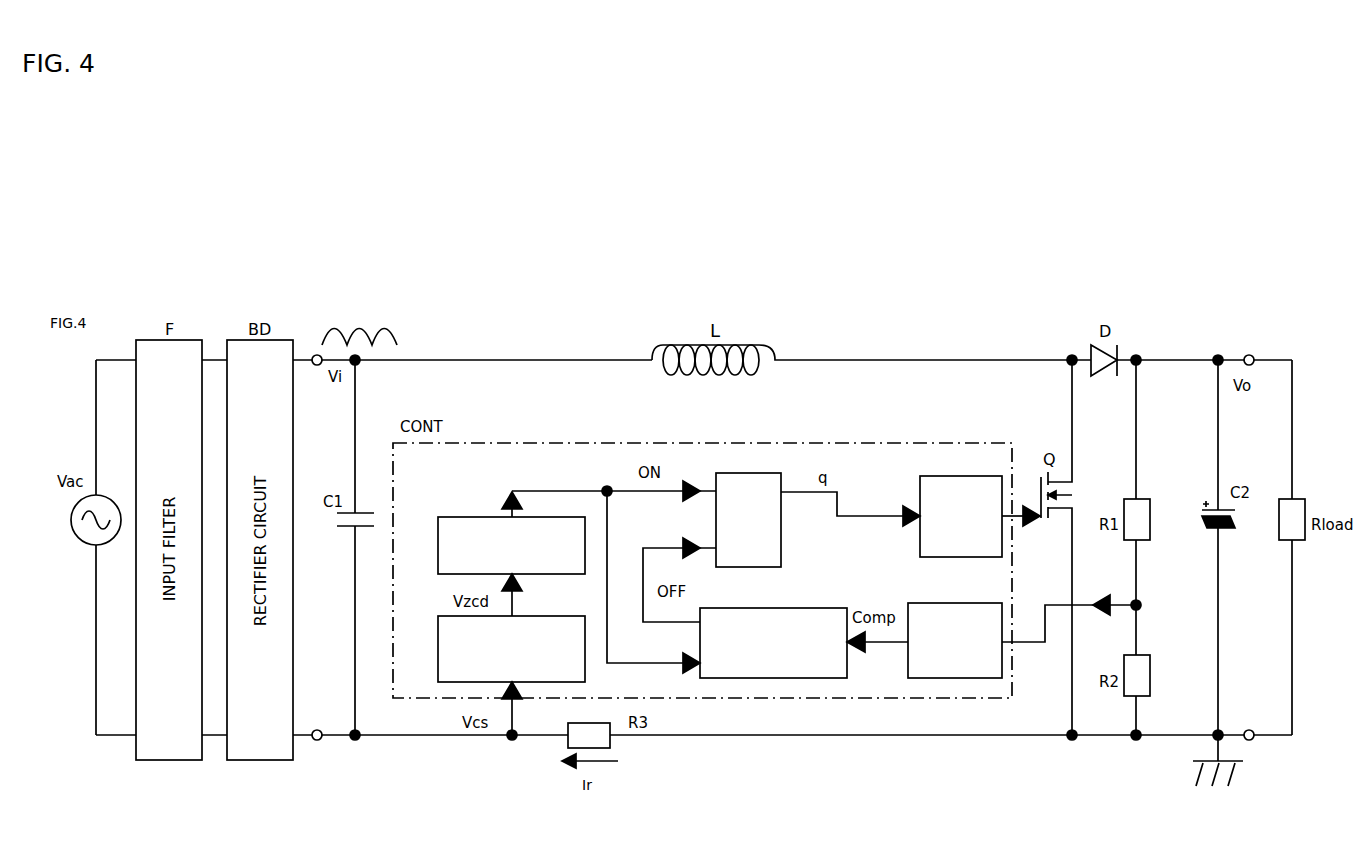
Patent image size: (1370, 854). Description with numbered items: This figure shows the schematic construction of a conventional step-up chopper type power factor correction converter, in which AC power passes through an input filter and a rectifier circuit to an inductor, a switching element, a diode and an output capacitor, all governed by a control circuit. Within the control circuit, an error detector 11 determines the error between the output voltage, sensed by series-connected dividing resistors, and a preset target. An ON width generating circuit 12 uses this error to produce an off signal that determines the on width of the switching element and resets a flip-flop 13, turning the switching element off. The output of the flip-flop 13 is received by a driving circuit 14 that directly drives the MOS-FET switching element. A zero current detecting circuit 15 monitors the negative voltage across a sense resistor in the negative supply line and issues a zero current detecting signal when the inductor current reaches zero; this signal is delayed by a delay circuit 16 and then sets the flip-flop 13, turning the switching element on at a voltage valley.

The error detector 11 is at (940, 603).
The ON width generating circuit 12 is at (830, 608).
The flip-flop 13 is at (781, 535).
The driving circuit 14 is at (947, 476).
The zero current detecting circuit 15 is at (575, 616).
The delay circuit 16 is at (470, 517).